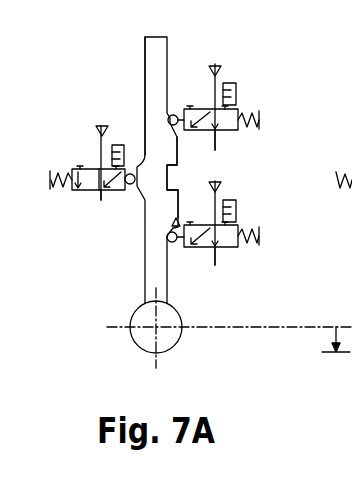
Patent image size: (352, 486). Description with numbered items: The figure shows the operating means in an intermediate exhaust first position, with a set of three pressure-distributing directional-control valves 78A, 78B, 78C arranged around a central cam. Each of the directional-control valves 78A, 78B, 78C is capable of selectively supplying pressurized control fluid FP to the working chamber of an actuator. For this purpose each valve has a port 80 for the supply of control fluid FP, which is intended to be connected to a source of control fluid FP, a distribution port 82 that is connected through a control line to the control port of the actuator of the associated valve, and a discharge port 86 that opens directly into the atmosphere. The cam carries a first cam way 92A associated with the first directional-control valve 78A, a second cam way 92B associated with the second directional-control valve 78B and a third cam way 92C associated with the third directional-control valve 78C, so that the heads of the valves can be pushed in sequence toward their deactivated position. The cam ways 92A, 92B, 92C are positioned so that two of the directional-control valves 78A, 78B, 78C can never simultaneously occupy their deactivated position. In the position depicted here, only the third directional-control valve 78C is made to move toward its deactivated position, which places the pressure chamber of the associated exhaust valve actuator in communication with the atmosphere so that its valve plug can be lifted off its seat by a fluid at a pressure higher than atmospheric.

The first pressure-distributing directional-control valve 78A is at (270, 232).
The second pressure-distributing directional-control valve 78B is at (252, 105).
The third pressure-distributing directional-control valve 78C is at (65, 197).
The port for the supply of control fluid 80 is at (97, 168).
The distribution port 82 is at (100, 199).
The discharge port 86 is at (107, 168).
The first cam way 92A is at (170, 223).
The second cam way 92B is at (175, 132).
The third cam way 92C is at (135, 163).
The pressurized control fluid FP is at (103, 124).